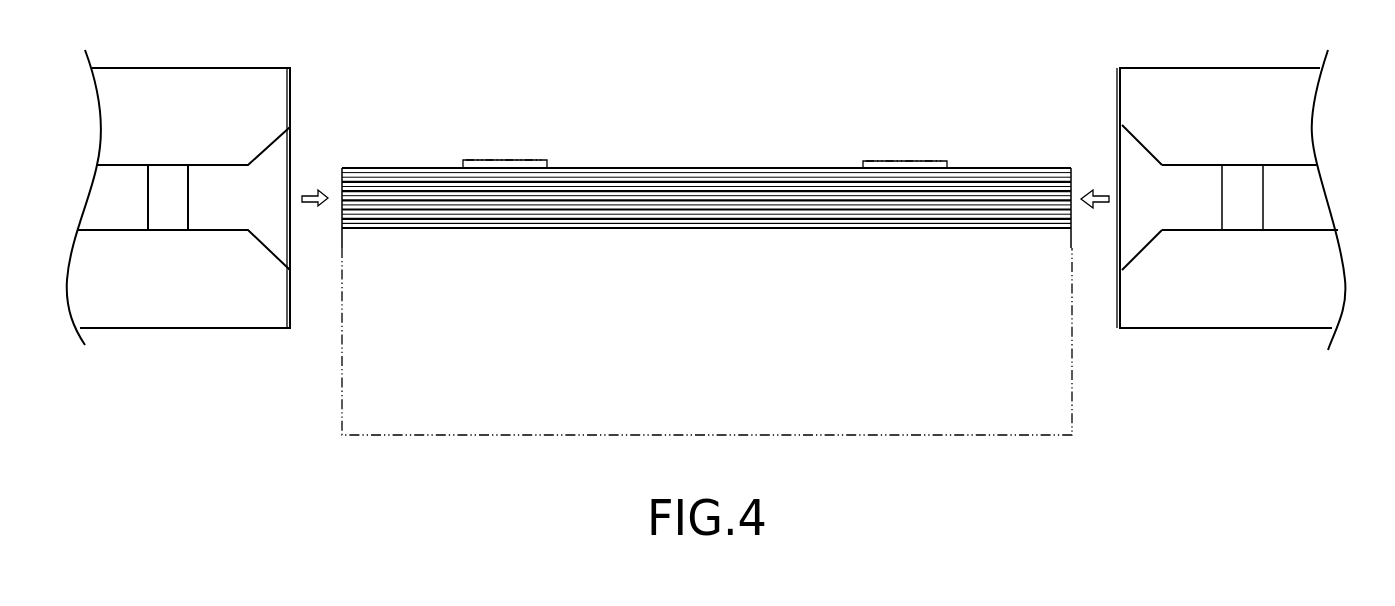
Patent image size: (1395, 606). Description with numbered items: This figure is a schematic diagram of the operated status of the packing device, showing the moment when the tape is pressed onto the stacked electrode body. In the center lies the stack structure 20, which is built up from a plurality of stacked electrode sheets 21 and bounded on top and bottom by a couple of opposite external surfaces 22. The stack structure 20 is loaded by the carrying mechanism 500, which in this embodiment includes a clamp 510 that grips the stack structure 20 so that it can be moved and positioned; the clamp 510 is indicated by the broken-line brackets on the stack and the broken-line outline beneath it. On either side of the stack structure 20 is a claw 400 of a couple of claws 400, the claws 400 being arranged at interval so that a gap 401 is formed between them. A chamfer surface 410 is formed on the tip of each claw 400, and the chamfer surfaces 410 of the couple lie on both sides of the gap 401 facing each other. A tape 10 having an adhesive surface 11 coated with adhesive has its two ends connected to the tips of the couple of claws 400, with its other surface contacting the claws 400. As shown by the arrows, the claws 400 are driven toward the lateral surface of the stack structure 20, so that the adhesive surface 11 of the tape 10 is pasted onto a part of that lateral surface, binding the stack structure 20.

The tape 10 is at (1118, 140).
The adhesive surface 11 is at (1118, 168).
The stack structure 20 is at (645, 167).
The electrode sheet 21 is at (740, 228).
The external surface 22 is at (705, 167).
The claw 400 is at (1227, 83).
The gap 401 is at (1202, 200).
The chamfer surface 410 is at (1122, 246).
The carrying mechanism 500 is at (353, 360).
The clamp 510 is at (495, 160).